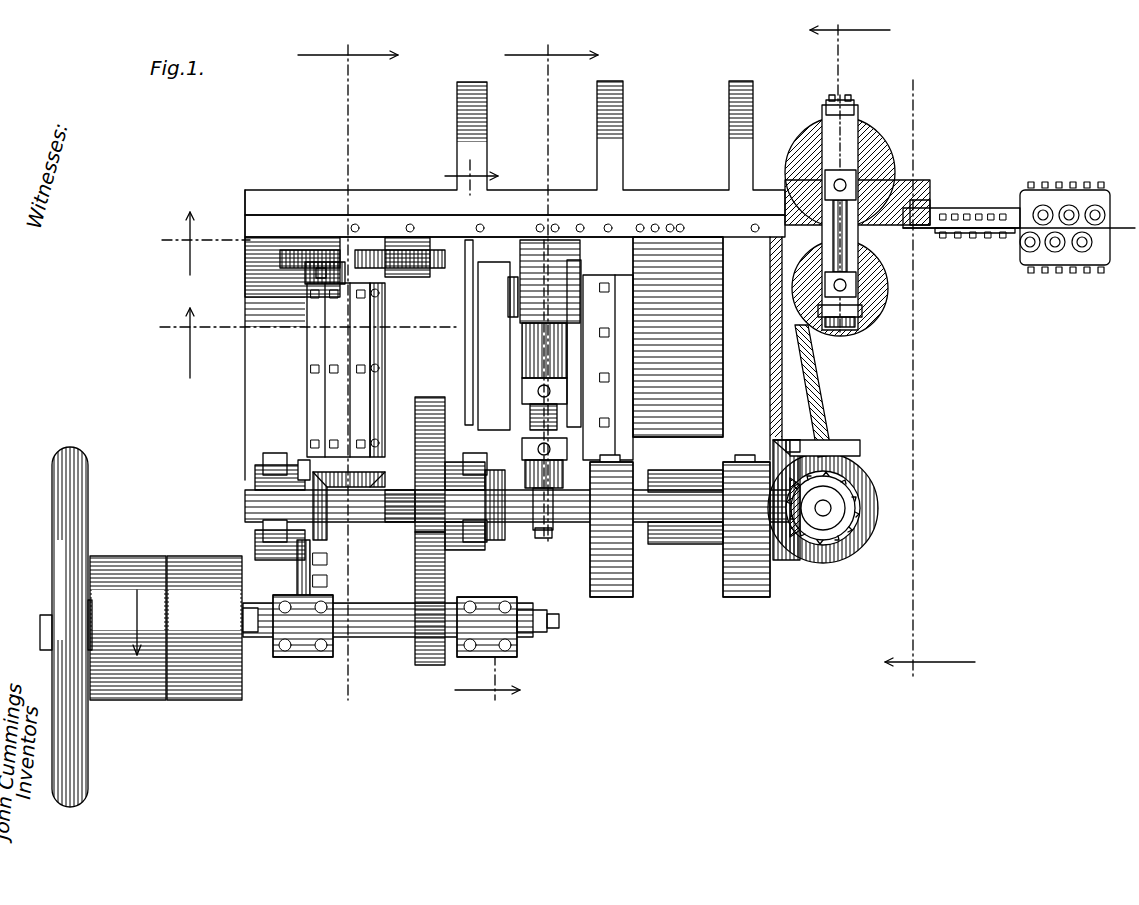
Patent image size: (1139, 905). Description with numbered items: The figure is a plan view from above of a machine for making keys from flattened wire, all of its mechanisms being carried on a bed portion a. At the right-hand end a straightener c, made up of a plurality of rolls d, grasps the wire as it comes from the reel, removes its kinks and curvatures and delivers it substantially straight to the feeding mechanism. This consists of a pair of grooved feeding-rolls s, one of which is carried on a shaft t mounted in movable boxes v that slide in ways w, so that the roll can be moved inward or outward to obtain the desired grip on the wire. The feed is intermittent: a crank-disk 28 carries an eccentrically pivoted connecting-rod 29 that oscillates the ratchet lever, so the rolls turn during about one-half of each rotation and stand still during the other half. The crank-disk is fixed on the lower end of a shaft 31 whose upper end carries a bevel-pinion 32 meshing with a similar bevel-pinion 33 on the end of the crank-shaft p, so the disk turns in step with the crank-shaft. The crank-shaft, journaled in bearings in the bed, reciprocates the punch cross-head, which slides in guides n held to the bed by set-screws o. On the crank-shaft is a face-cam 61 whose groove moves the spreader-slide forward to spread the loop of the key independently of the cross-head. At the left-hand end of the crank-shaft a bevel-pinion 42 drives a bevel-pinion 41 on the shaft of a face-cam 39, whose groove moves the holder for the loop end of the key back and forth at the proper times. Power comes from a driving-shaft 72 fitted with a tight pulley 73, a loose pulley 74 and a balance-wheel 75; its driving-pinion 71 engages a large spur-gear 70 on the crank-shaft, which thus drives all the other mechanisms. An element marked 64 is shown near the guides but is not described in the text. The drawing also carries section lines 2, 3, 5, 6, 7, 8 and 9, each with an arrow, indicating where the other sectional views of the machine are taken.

The bed portion a is at (668, 197).
The straightener c is at (995, 215).
The rolls d is at (1093, 205).
The guides n is at (470, 360).
The set-screws o is at (612, 378).
The crank-shaft p is at (680, 522).
The feeding-rolls s is at (860, 150).
The shaft t is at (880, 290).
The movable boxes v is at (862, 285).
The ways w is at (842, 185).
The crank-disk 28 is at (845, 555).
The connecting-rod 29 is at (820, 400).
The shaft 31 is at (826, 506).
The bevel-pinion 32 is at (815, 560).
The bevel-pinion 33 is at (790, 555).
The face-cam 39 is at (302, 255).
The bevel-pinion 41 is at (372, 482).
The bevel-pinion 42 is at (316, 540).
The face-cam 61 is at (512, 555).
The guide rail 64 is at (505, 222).
The spur-gear 70 is at (415, 557).
The driving-pinion 71 is at (435, 665).
The driving-shaft 72 is at (382, 640).
The tight pulley 73 is at (137, 570).
The loose pulley 74 is at (195, 570).
The balance-wheel 75 is at (86, 466).
The line 2 is at (930, 392).
The line 3 is at (850, 61).
The line 5 is at (348, 361).
The line 6 is at (551, 284).
The line 7 is at (482, 434).
The line 8 is at (300, 343).
The line 9 is at (195, 243).